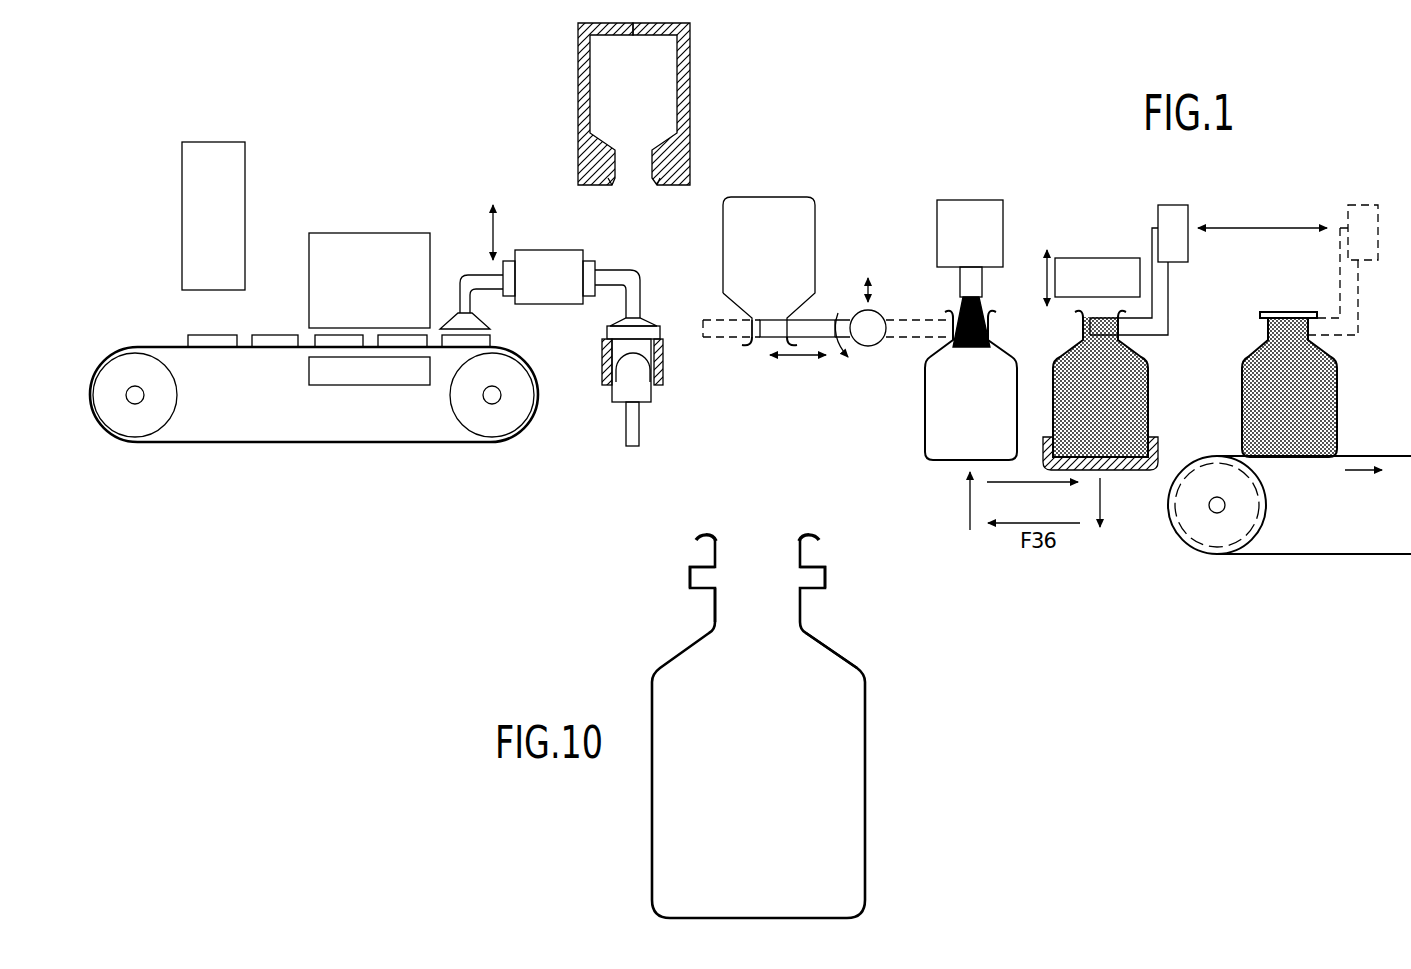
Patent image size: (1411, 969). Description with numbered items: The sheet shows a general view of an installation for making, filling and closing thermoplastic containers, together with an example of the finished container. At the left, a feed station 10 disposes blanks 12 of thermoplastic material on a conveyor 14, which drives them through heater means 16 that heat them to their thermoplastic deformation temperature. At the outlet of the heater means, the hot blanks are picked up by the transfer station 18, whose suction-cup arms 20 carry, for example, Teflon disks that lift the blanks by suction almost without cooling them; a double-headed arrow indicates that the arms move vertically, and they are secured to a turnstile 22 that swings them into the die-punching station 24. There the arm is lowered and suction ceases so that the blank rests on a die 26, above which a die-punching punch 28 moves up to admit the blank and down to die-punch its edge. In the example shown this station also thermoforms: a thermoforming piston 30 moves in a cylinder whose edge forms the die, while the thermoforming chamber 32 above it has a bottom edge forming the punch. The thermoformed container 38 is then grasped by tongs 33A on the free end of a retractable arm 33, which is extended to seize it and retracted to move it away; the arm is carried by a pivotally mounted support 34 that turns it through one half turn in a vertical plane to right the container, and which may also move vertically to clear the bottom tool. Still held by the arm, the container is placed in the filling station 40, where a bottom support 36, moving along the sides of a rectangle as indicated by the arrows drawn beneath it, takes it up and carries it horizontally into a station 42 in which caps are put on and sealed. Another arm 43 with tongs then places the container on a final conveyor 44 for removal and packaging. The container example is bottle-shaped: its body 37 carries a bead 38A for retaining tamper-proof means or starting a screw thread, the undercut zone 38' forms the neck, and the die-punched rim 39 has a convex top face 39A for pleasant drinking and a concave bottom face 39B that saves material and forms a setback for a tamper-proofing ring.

In FIG. 1, the feed station 10 is at (236, 157).
In FIG. 1, the blanks 12 is at (217, 338).
In FIG. 1, the conveyor 14 is at (178, 350).
In FIG. 1, the heater means 16 is at (367, 253).
In FIG. 1, the transfer station 18 is at (553, 245).
In FIG. 1, the suction-cup arms 20 is at (467, 277).
In FIG. 1, the turnstile 22 is at (563, 280).
In FIG. 1, the die-punching station 24 is at (655, 302).
In FIG. 1, the die 26 is at (603, 357).
In FIG. 1, the die-punching punch 28 is at (661, 181).
In FIG. 1, the thermoforming piston 30 is at (645, 368).
In FIG. 1, the thermoforming chamber 32 is at (596, 90).
In FIG. 1, the retractable arm 33 is at (820, 326).
In FIG. 1, the tongs 33A is at (768, 342).
In FIG. 1, the pivotally mounted support 34 is at (870, 316).
In FIG. 1, the bottom support 36 is at (1158, 447).
In FIG. 10, the body 37 is at (843, 656).
In FIG. 10, the container 38 is at (802, 729).
In FIG. 10, the bead 38A is at (826, 574).
In FIG. 10, the undercut zone 38' is at (677, 599).
In FIG. 10, the die-punched rim 39 is at (818, 535).
In FIG. 10, the top face of the rim 39A is at (704, 535).
In FIG. 10, the bottom face of the rim 39B is at (699, 558).
In FIG. 1, the filling station 40 is at (975, 213).
In FIG. 1, the station 42 is at (1090, 275).
In FIG. 1, the arm 43 is at (1350, 322).
In FIG. 1, the final conveyor 44 is at (1170, 522).